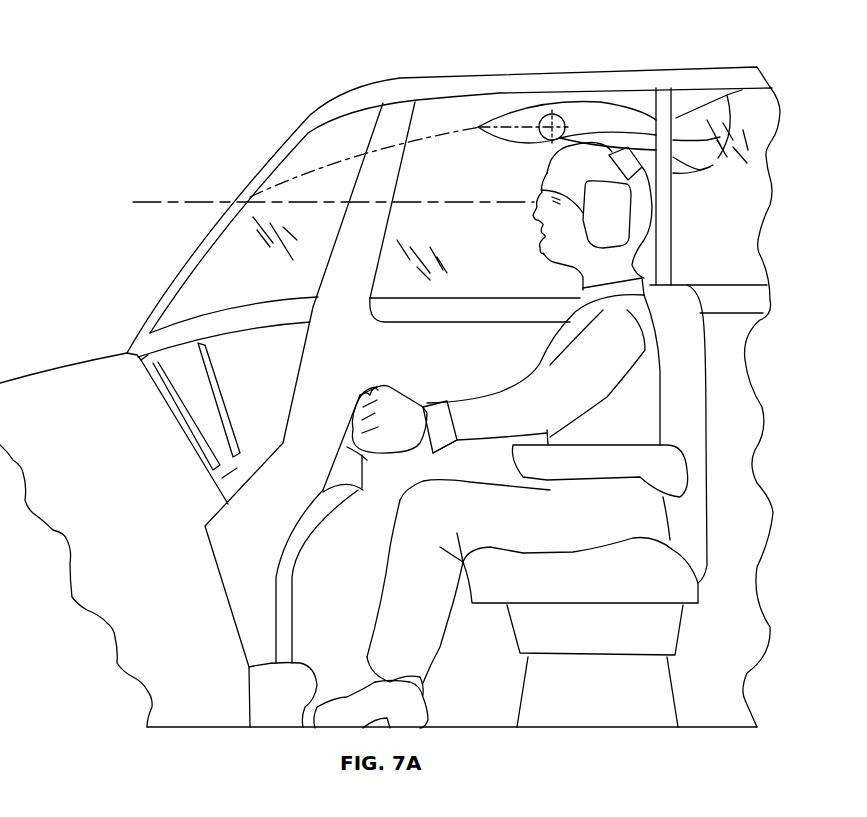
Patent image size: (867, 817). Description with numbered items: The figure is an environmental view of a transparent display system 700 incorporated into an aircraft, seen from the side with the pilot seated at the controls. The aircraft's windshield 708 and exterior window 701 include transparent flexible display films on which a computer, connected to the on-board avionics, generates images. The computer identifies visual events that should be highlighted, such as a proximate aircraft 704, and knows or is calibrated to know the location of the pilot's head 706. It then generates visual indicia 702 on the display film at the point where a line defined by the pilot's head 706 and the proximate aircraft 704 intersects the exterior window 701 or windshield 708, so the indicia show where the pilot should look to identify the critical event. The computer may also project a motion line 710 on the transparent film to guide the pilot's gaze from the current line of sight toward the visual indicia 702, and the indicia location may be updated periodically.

The transparent display system 700 is at (100, 200).
The exterior window 701 is at (378, 283).
The visual indicia 702 is at (544, 129).
The proximate aircraft 704 is at (597, 115).
The pilot's head 706 is at (200, 203).
The windshield 708 is at (178, 310).
The motion line 710 is at (277, 186).